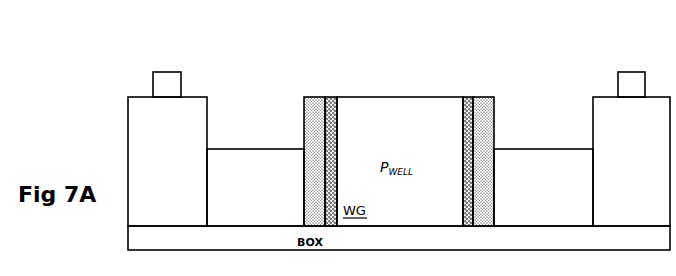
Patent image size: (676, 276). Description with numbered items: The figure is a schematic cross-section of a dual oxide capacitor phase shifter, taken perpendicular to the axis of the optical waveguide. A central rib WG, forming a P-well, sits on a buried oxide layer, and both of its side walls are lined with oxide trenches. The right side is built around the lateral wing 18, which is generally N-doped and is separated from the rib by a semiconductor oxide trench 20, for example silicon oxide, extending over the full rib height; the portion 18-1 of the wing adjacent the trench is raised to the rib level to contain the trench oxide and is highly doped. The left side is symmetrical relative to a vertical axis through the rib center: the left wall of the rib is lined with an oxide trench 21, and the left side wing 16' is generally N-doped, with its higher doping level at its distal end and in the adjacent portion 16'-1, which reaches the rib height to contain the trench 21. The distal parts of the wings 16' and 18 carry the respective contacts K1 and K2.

The left side wing 16' is at (216, 131).
The adjacent portion of wing 16' 16'-1 is at (289, 149).
The oxide trench 21 is at (337, 108).
The semiconductor oxide trench 20 is at (463, 111).
The adjacent portion of wing 18 18-1 is at (482, 97).
The lateral wing 18 is at (549, 96).